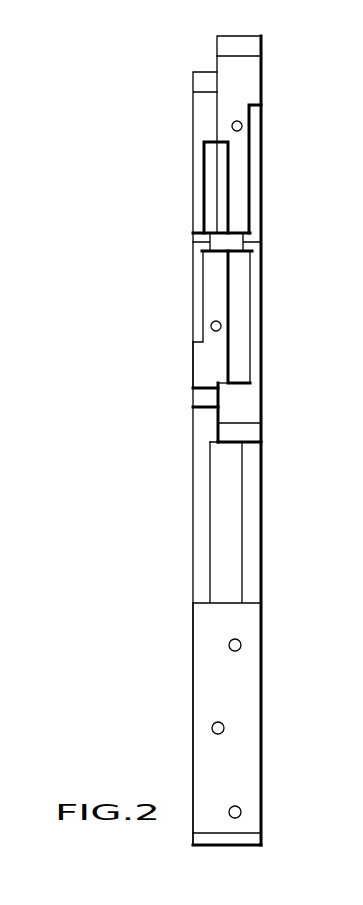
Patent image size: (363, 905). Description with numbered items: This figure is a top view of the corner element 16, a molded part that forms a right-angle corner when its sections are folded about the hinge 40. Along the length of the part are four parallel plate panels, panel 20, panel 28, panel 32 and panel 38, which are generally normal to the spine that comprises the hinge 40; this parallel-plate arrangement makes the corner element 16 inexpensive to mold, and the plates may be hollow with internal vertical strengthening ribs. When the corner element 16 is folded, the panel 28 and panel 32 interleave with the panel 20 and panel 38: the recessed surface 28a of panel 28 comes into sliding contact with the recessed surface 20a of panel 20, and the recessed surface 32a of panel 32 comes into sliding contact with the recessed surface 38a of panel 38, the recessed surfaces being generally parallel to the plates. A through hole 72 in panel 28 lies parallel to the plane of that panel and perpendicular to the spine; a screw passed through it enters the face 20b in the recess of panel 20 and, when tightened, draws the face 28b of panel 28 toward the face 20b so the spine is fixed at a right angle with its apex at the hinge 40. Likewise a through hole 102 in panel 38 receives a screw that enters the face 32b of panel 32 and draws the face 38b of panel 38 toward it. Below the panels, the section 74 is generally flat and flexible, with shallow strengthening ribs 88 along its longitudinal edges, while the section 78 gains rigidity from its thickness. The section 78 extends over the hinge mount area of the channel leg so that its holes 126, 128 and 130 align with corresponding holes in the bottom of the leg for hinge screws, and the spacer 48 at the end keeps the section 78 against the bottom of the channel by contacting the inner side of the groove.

The corner element 16 is at (262, 38).
The panel 20 is at (252, 413).
The recessed surface 20a is at (250, 332).
The face 20b is at (237, 383).
The panel 28 is at (254, 74).
The recessed surface 28a is at (250, 158).
The face 28b is at (254, 60).
The panel 32 is at (198, 100).
The recessed surface 32a is at (204, 218).
The face 32b is at (216, 144).
The panel 38 is at (192, 380).
The recessed surface 38a is at (203, 270).
The face 38b is at (198, 357).
The hinge 40 is at (262, 243).
The spacer 48 is at (242, 838).
The through hole 72 is at (232, 128).
The section 74 is at (233, 578).
The section 78 is at (257, 703).
The strengthening ribs 88 is at (252, 500).
The through hole 102 is at (211, 325).
The hole 126 is at (229, 808).
The hole 128 is at (212, 723).
The hole 130 is at (229, 641).